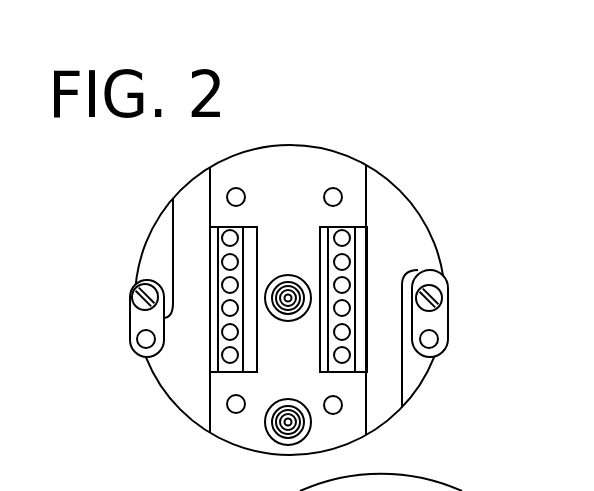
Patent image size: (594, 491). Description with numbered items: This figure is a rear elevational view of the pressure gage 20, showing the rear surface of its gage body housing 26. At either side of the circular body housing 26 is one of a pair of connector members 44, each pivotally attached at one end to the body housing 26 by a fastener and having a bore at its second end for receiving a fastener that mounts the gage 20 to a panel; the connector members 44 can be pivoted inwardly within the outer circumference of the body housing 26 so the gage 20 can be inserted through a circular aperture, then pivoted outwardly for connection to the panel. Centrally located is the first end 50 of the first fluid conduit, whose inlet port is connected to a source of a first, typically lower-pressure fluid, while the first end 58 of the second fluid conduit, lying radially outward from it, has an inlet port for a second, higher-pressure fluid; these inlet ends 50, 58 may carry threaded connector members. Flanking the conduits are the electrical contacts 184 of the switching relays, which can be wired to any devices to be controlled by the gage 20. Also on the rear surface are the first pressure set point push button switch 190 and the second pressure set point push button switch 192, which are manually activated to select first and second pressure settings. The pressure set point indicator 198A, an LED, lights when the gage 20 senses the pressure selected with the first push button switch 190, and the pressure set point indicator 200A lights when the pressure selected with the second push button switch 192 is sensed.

The pressure gage 20 is at (470, 169).
The gage body housing 26 is at (399, 420).
The connector member 44 is at (144, 323).
The first end of first fluid conduit 50 is at (304, 316).
The first end of second fluid conduit 58 is at (280, 441).
The electrical contacts 184 is at (226, 237).
The first pressure set point push button switch 190 is at (228, 198).
The second pressure set point push button switch 192 is at (228, 405).
The pressure set point indicator 198A is at (339, 189).
The pressure set point indicator 200A is at (335, 413).